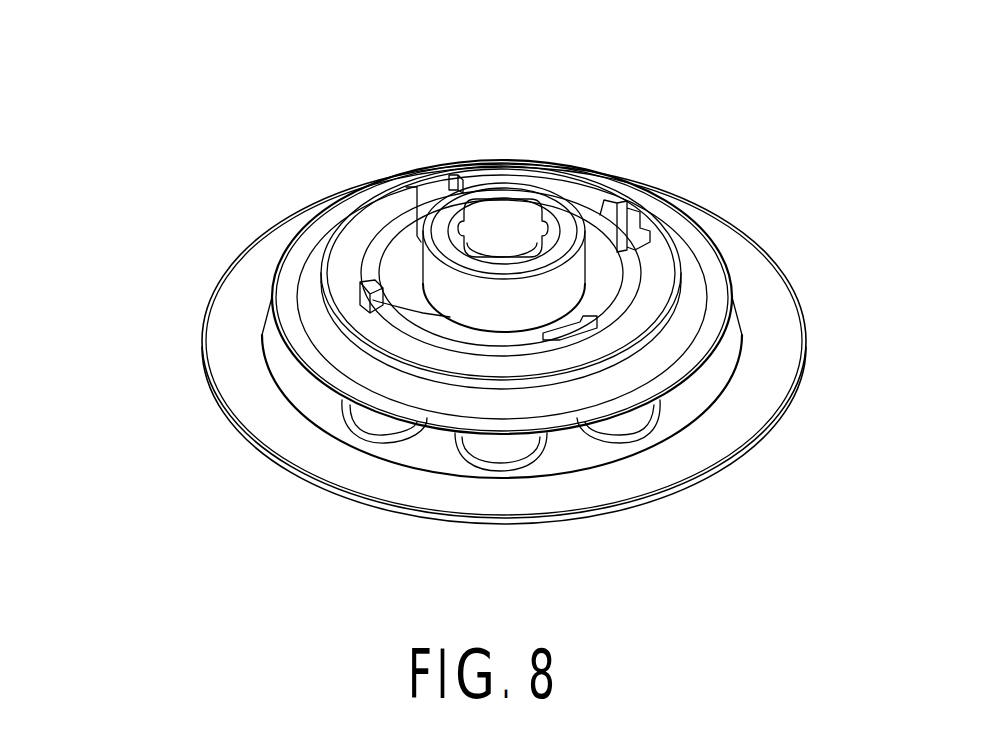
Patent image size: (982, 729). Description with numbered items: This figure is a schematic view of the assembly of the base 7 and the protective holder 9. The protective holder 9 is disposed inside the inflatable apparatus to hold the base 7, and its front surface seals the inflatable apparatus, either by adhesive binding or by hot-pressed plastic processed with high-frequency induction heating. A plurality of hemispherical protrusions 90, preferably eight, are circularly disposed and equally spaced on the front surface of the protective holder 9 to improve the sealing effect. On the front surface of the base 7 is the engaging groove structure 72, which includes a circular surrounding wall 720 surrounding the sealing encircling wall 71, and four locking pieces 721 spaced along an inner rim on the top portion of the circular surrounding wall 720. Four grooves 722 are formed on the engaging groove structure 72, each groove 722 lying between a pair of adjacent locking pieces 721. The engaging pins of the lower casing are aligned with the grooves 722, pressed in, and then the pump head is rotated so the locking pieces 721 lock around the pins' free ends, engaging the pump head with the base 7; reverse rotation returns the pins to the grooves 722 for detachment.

The base 7 is at (307, 260).
The protective holder 9 is at (243, 372).
The hemispherical protrusions 90 is at (612, 420).
The sealing encircling wall 71 is at (545, 203).
The engaging groove structure 72 is at (612, 328).
The circular surrounding wall 720 is at (390, 352).
The locking pieces 721 is at (622, 300).
The grooves 722 is at (633, 217).